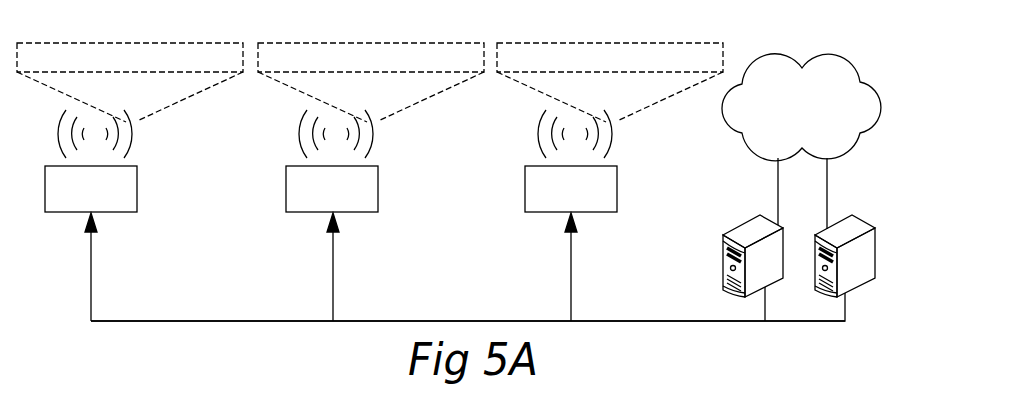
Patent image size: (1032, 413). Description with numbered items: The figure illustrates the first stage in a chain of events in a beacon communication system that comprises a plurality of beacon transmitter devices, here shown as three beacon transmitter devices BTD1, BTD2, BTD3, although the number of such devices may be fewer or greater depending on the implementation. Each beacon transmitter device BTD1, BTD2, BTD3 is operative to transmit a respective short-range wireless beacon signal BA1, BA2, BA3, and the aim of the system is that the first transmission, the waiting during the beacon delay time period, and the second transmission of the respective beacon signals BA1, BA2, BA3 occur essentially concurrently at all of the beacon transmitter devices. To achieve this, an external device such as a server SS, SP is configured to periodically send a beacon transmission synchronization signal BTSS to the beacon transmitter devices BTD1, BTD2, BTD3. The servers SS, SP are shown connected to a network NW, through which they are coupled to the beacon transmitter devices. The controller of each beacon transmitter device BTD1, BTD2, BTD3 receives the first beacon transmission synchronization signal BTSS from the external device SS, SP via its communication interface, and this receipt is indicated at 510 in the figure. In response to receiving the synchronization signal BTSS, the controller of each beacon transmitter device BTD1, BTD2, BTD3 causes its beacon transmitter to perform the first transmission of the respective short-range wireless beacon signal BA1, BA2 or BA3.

The receipt of beacon transmission synchronization signal 510 is at (293, 322).
The beacon transmission synchronization signal BTSS is at (468, 307).
The first beacon transmitter device BTD1 is at (130, 127).
The second beacon transmitter device BTD2 is at (371, 127).
The third beacon transmitter device BTD3 is at (610, 127).
The first short-range wireless beacon signal BA1 is at (130, 152).
The second short-range wireless beacon signal BA2 is at (371, 152).
The third short-range wireless beacon signal BA3 is at (610, 152).
The network NW is at (822, 118).
The server SP is at (723, 268).
The server SS is at (875, 262).